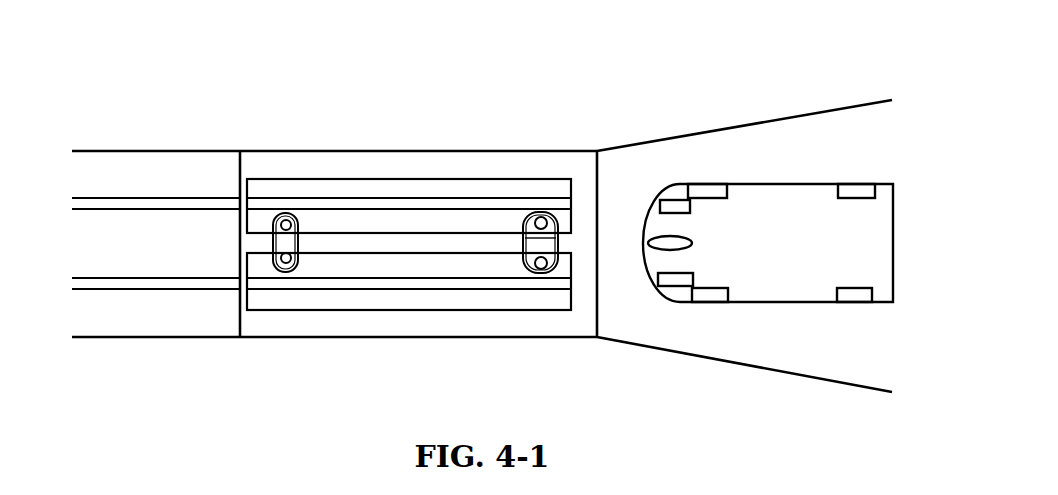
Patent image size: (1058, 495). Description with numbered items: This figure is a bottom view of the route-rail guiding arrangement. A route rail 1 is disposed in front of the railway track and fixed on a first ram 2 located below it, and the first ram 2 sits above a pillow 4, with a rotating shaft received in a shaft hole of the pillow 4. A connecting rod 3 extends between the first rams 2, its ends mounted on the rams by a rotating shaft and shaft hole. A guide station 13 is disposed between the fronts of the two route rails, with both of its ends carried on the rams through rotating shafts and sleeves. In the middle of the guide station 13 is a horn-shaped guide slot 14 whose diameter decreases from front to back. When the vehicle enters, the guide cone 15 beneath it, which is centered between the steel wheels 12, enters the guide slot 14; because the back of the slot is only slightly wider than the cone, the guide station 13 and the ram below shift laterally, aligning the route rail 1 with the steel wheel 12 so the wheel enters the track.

The route rail 1 is at (321, 159).
The first ram 2 is at (409, 169).
The connecting rod 3 is at (234, 150).
The pillow 4 is at (482, 210).
The steel wheel 12 is at (768, 165).
The guide station 13 is at (498, 151).
The guide slot 14 is at (565, 149).
The guide cone 15 is at (652, 139).